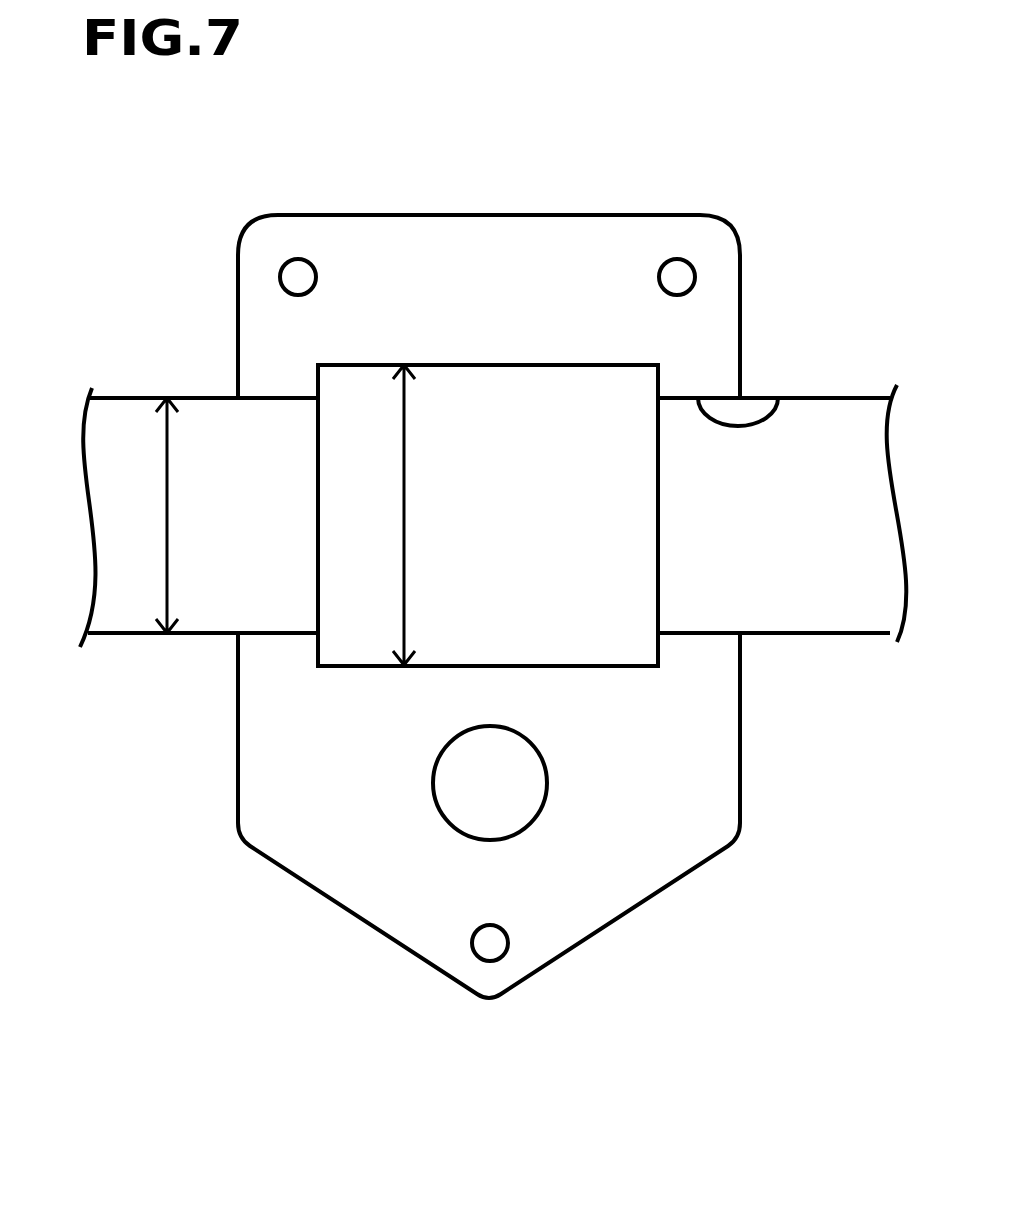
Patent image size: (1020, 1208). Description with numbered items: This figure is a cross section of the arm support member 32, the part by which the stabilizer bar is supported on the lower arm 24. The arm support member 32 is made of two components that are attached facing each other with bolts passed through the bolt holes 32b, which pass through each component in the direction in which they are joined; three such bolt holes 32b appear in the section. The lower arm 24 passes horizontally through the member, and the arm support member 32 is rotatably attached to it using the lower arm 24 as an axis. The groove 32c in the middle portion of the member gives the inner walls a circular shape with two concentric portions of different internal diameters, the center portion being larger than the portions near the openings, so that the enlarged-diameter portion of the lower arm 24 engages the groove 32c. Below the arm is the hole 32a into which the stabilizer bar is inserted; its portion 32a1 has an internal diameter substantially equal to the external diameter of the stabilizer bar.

The lower arm 24 is at (130, 397).
The arm support member 32 is at (653, 215).
The hole 32a is at (354, 870).
The portion of the internal diameter of hole 32a1 is at (435, 802).
The bolt holes 32b is at (281, 268).
The groove 32c is at (776, 398).